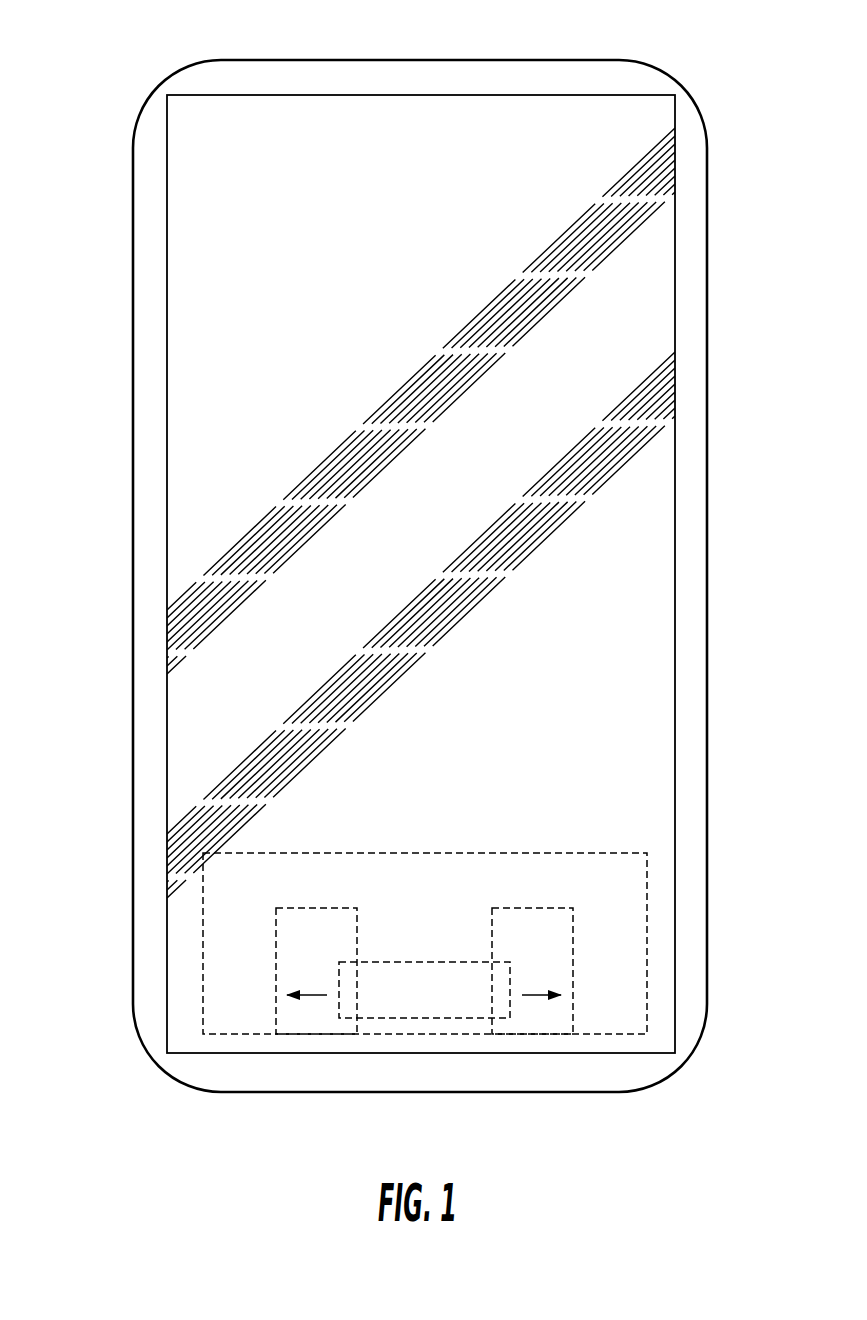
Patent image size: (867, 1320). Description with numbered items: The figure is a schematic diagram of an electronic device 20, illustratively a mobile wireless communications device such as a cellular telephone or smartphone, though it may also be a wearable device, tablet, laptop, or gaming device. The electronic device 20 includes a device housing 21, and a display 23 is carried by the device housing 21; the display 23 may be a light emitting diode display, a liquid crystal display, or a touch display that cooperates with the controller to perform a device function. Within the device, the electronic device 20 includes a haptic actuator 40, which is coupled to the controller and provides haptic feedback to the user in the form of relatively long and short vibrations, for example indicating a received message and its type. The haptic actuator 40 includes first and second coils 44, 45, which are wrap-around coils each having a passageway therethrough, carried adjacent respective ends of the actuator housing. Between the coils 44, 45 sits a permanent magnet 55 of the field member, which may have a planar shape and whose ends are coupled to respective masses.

The electronic device 20 is at (198, 60).
The device housing 21 is at (133, 247).
The display 23 is at (627, 262).
The haptic actuator 40 is at (476, 998).
The first coil 44 is at (296, 1022).
The second coil 45 is at (545, 1013).
The permanent magnet 55 is at (418, 1012).